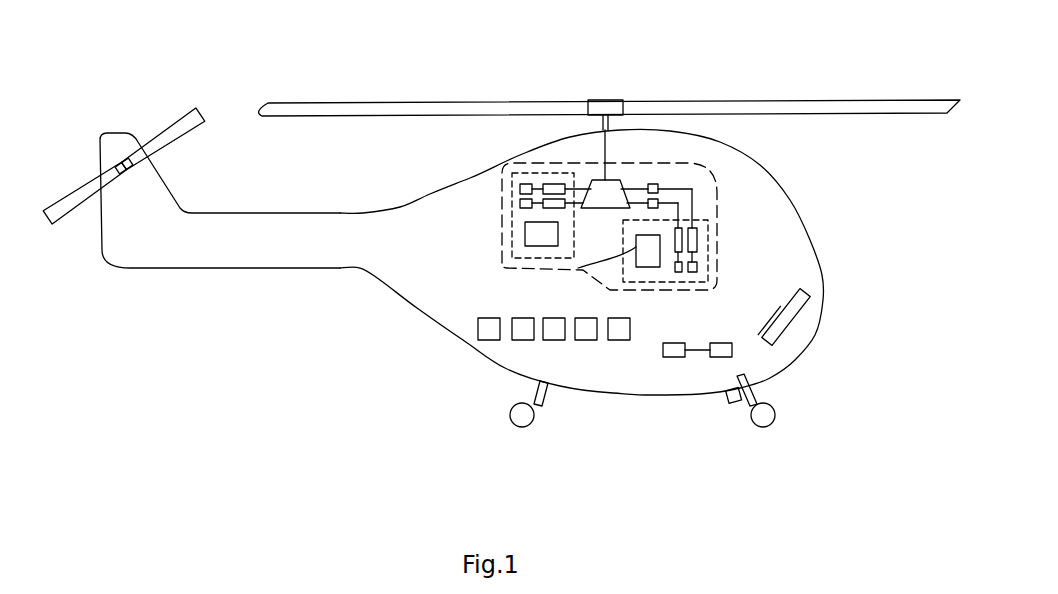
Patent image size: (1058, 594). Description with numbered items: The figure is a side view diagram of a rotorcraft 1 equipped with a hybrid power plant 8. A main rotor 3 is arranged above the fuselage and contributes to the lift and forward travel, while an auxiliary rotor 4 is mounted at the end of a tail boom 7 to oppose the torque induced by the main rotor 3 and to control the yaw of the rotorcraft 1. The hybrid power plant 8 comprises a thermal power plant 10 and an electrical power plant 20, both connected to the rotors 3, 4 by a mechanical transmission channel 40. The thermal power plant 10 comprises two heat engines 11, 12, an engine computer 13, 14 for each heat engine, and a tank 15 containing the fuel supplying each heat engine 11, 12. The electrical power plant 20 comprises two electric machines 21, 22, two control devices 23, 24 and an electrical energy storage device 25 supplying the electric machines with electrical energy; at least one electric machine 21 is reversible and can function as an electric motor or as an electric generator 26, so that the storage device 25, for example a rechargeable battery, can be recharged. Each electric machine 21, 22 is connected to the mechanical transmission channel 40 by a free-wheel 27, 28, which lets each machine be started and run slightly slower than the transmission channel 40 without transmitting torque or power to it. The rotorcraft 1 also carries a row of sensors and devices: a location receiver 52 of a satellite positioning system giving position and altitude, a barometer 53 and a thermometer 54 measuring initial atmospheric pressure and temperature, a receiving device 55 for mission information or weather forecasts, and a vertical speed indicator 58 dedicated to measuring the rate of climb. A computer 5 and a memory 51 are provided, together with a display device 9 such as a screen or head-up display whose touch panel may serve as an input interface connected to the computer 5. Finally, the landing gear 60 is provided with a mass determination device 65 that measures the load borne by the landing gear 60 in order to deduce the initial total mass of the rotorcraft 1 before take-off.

The rotorcraft 1 is at (303, 415).
The main rotor 3 is at (903, 100).
The auxiliary rotor 4 is at (167, 130).
The computer 5 is at (732, 348).
The tail boom 7 is at (265, 223).
The hybrid power plant 8 is at (717, 193).
The display device 9 is at (777, 283).
The thermal power plant 10 is at (518, 172).
The heat engine 11 is at (548, 184).
The heat engine 12 is at (557, 186).
The engine computer 13 is at (520, 203).
The engine computer 14 is at (520, 189).
The tank 15 is at (525, 232).
The electrical power plant 20 is at (717, 265).
The electric machine 21 is at (697, 238).
The electric machine 22 is at (670, 226).
The control device 23 is at (692, 272).
The control device 24 is at (678, 272).
The electrical energy storage device 25 is at (540, 278).
The electric generator 26 is at (578, 268).
The free-wheel 27 is at (653, 184).
The free-wheel 28 is at (658, 203).
The mechanical transmission channel 40 is at (590, 178).
The memory 51 is at (675, 357).
The location receiver 52 is at (619, 340).
The barometer 53 is at (586, 340).
The thermometer 54 is at (553, 340).
The receiving device 55 is at (478, 329).
The vertical speed indicator 58 is at (522, 340).
The landing gear 60 is at (547, 397).
The mass determination device 65 is at (727, 396).